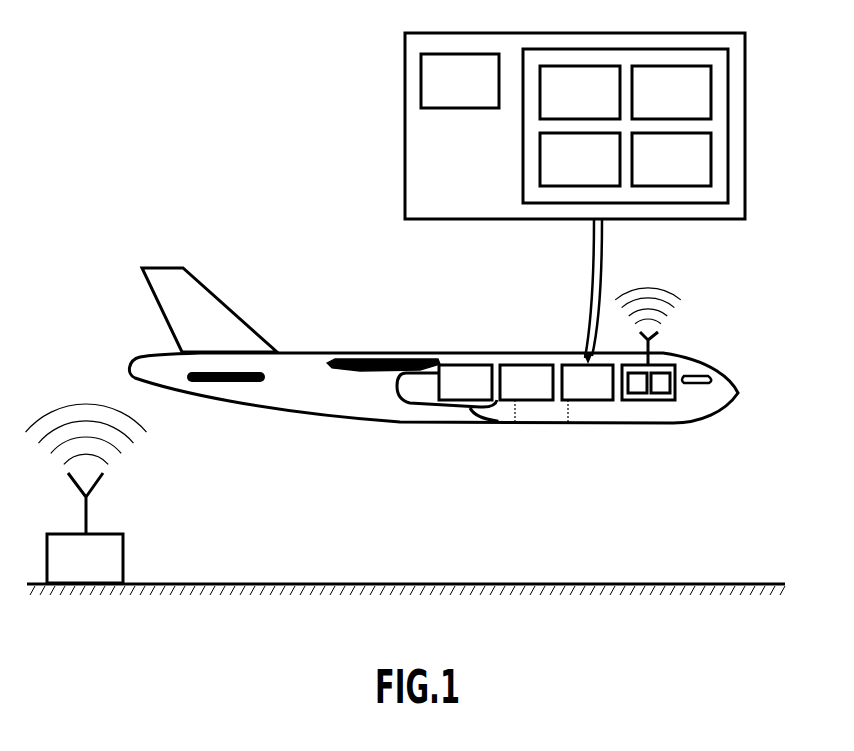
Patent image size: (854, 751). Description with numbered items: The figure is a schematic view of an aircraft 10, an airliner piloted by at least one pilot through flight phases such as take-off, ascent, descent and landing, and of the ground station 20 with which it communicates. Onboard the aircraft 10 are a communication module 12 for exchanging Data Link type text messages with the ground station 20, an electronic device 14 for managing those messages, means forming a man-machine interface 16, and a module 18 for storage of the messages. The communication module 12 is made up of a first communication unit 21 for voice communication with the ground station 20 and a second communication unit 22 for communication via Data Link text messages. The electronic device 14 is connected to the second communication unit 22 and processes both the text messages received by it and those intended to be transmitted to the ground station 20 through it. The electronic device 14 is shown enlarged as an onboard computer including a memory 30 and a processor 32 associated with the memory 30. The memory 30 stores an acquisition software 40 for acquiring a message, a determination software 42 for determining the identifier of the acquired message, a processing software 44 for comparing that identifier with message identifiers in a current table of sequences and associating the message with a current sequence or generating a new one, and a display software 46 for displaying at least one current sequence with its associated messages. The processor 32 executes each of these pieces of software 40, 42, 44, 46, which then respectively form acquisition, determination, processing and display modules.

The aircraft 10 is at (360, 337).
The communication module 12 is at (668, 381).
The electronic device for managing messages 14 is at (603, 228).
The man-machine interface means 16 is at (525, 378).
The storage module 18 is at (468, 378).
The ground station 20 is at (86, 493).
The first communication unit 21 is at (659, 397).
The second communication unit 22 is at (631, 394).
The memory 30 is at (522, 155).
The processor 32 is at (460, 81).
The acquisition software 40 is at (580, 92).
The determination software 42 is at (671, 92).
The processing software 44 is at (580, 159).
The display software 46 is at (671, 159).